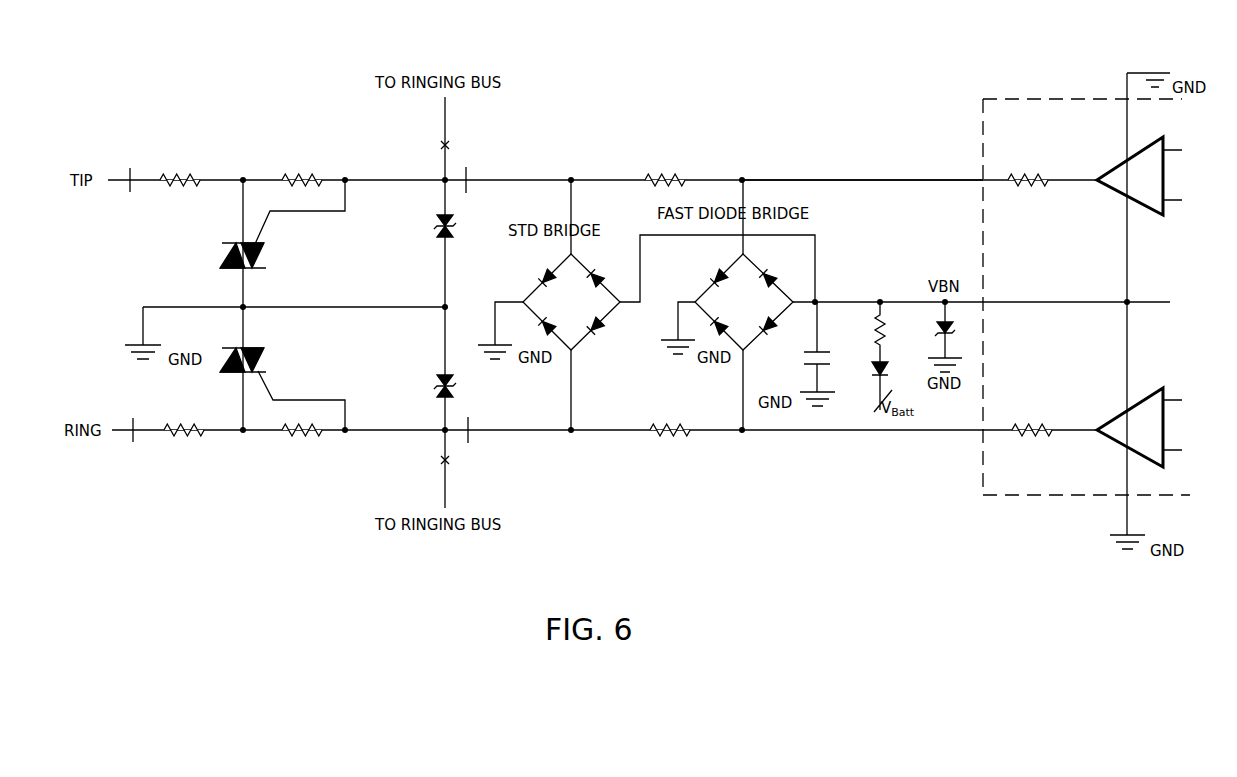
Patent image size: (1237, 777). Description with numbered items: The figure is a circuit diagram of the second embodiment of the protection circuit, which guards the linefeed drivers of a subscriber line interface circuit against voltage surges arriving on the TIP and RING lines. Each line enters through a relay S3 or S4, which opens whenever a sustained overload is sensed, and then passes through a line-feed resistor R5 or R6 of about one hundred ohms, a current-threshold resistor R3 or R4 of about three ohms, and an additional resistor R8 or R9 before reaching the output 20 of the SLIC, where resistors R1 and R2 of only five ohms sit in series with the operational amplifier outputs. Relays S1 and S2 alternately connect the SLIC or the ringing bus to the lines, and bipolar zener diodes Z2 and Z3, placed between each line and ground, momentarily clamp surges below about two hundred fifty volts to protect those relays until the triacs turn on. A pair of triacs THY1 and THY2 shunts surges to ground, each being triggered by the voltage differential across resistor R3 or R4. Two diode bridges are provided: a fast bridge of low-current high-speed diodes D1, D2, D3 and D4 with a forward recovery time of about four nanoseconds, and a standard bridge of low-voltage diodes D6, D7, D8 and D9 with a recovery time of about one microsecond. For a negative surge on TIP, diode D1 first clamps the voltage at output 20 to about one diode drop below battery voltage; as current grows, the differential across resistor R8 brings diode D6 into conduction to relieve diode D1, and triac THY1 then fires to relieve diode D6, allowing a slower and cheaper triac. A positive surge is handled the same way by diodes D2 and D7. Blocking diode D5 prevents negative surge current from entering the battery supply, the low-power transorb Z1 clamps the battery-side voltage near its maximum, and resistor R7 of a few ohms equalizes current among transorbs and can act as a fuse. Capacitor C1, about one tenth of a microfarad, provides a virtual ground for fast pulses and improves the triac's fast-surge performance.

The output of the SLIC circuit 20 is at (886, 176).
The relay S1 is at (464, 171).
The relay S2 is at (467, 442).
The relay S3 is at (128, 171).
The relay S4 is at (130, 441).
The resistor R1 is at (1028, 167).
The resistor R2 is at (1032, 444).
The resistor R3 is at (302, 168).
The resistor R4 is at (302, 444).
The resistor R5 is at (180, 168).
The resistor R6 is at (184, 444).
The resistor R7 is at (869, 332).
The resistor R8 is at (665, 167).
The resistor R9 is at (670, 444).
The triac THY1 is at (282, 237).
The triac THY2 is at (282, 379).
The low-power transorb Z1 is at (938, 337).
The bipolar zener diode Z2 is at (457, 226).
The bipolar zener diode Z3 is at (457, 386).
The diode D1 is at (778, 270).
The diode D2 is at (705, 270).
The diode D3 is at (705, 327).
The diode D4 is at (780, 330).
The diode D5 is at (871, 387).
The diode D6 is at (604, 270).
The diode D7 is at (534, 270).
The diode D8 is at (534, 330).
The diode D9 is at (605, 330).
The capacitor C1 is at (812, 354).